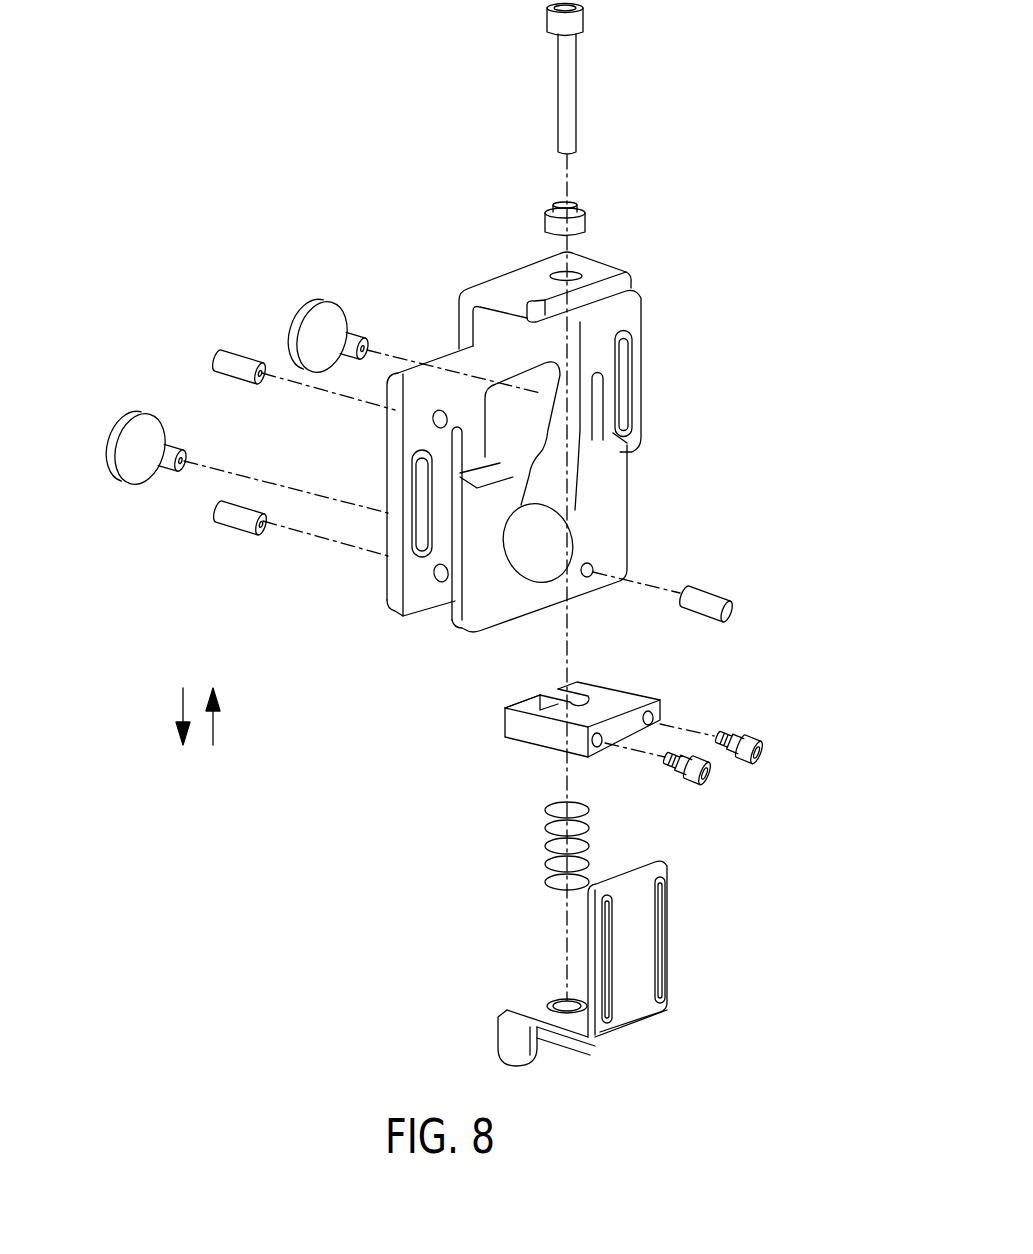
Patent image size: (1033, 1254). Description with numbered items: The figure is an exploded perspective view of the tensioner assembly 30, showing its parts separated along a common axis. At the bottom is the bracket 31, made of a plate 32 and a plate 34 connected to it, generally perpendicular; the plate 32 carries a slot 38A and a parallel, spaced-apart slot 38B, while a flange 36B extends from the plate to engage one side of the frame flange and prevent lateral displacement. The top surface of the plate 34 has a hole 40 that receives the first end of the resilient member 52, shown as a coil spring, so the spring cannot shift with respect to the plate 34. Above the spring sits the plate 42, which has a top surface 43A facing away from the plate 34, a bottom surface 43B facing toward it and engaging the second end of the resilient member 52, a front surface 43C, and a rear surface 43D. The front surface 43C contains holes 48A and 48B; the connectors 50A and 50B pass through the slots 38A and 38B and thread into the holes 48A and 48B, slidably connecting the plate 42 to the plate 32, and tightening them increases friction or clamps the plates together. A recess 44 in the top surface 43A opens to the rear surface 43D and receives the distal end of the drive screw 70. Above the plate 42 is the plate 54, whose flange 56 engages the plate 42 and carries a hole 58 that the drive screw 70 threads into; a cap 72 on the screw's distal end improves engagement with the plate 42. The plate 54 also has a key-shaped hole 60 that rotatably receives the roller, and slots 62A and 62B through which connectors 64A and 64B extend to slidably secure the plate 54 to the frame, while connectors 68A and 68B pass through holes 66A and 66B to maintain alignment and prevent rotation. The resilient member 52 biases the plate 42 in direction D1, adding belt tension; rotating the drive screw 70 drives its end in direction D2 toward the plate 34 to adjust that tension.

The tensioner assembly 30 is at (222, 168).
The bracket 31 is at (672, 876).
The plate 32 is at (648, 912).
The plate 34 is at (570, 1045).
The flange 36B is at (505, 1048).
The slot 38A is at (667, 947).
The slot 38B is at (603, 937).
The hole 40 is at (555, 1004).
The plate 42 is at (640, 704).
The top surface 43A is at (610, 700).
The bottom surface 43B is at (523, 758).
The front surface 43C is at (636, 740).
The rear surface 43D is at (505, 706).
The recess 44 is at (553, 692).
The hole 48A is at (656, 716).
The hole 48B is at (598, 750).
The connector 50A is at (754, 757).
The connector 50B is at (697, 772).
The resilient member 52 is at (537, 867).
The plate 54 is at (487, 630).
The flange 56 is at (604, 270).
The hole 58 is at (552, 268).
The hole 60 is at (527, 545).
The slot 62A is at (634, 362).
The slot 62B is at (412, 530).
The connector 64A is at (333, 302).
The connector 64B is at (140, 420).
The hole 66A is at (431, 419).
The hole 66B is at (441, 584).
The connector 68A is at (235, 356).
The connector 68B is at (238, 528).
The drive screw 70 is at (567, 70).
The cap 72 is at (582, 222).
The direction D1 is at (214, 725).
The direction D2 is at (182, 710).